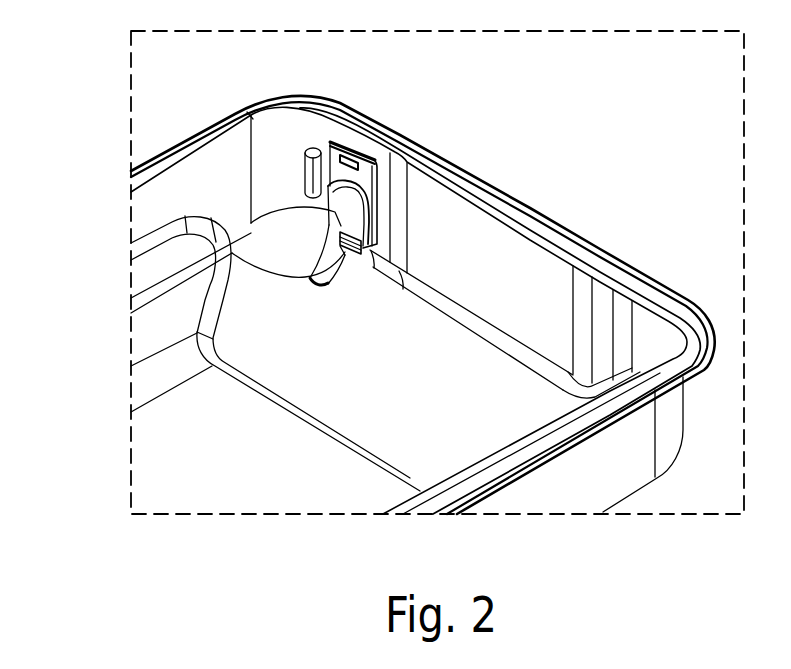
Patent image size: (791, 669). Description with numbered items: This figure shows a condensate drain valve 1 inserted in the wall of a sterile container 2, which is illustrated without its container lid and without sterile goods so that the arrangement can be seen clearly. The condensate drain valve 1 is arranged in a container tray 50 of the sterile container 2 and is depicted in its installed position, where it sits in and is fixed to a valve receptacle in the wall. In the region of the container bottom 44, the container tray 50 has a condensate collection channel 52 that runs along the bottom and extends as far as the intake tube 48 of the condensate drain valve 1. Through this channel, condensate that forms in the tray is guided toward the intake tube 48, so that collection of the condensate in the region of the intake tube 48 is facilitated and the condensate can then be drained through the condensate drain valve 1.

The condensate drain valve 1 is at (362, 154).
The sterile container 2 is at (631, 186).
The container bottom 44 is at (400, 362).
The intake tube 48 is at (243, 260).
The container tray 50 is at (645, 281).
The condensate collection channel 52 is at (236, 332).